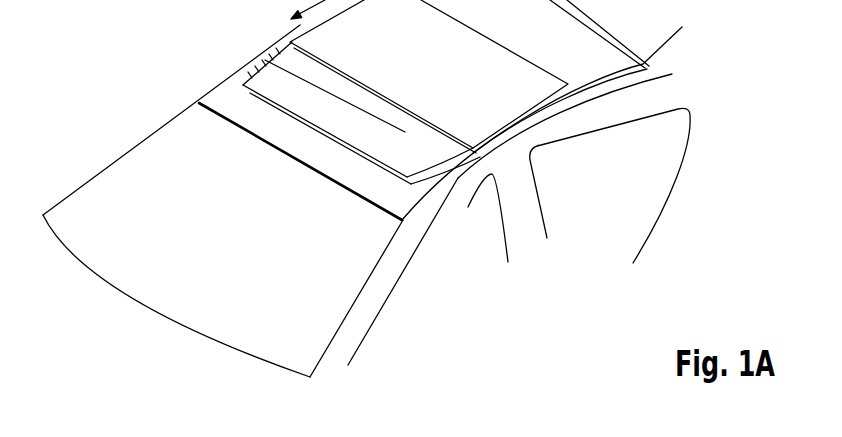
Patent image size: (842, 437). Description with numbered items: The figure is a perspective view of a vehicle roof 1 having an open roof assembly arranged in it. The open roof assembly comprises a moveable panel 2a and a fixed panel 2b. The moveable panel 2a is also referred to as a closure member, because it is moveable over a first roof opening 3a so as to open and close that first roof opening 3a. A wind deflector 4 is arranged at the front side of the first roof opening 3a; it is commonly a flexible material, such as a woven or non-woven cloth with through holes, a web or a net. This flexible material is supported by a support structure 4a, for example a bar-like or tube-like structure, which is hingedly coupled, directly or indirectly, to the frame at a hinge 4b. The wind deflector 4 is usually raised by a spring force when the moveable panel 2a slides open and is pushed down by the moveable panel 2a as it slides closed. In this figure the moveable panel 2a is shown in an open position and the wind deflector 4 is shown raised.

The vehicle roof 1 is at (637, 102).
The moveable panel 2a is at (446, 63).
The fixed panel 2b is at (547, 31).
The first roof opening 3a is at (301, 90).
The wind deflector 4 is at (247, 107).
The support structure 4a is at (378, 158).
The hinge 4b is at (250, 57).